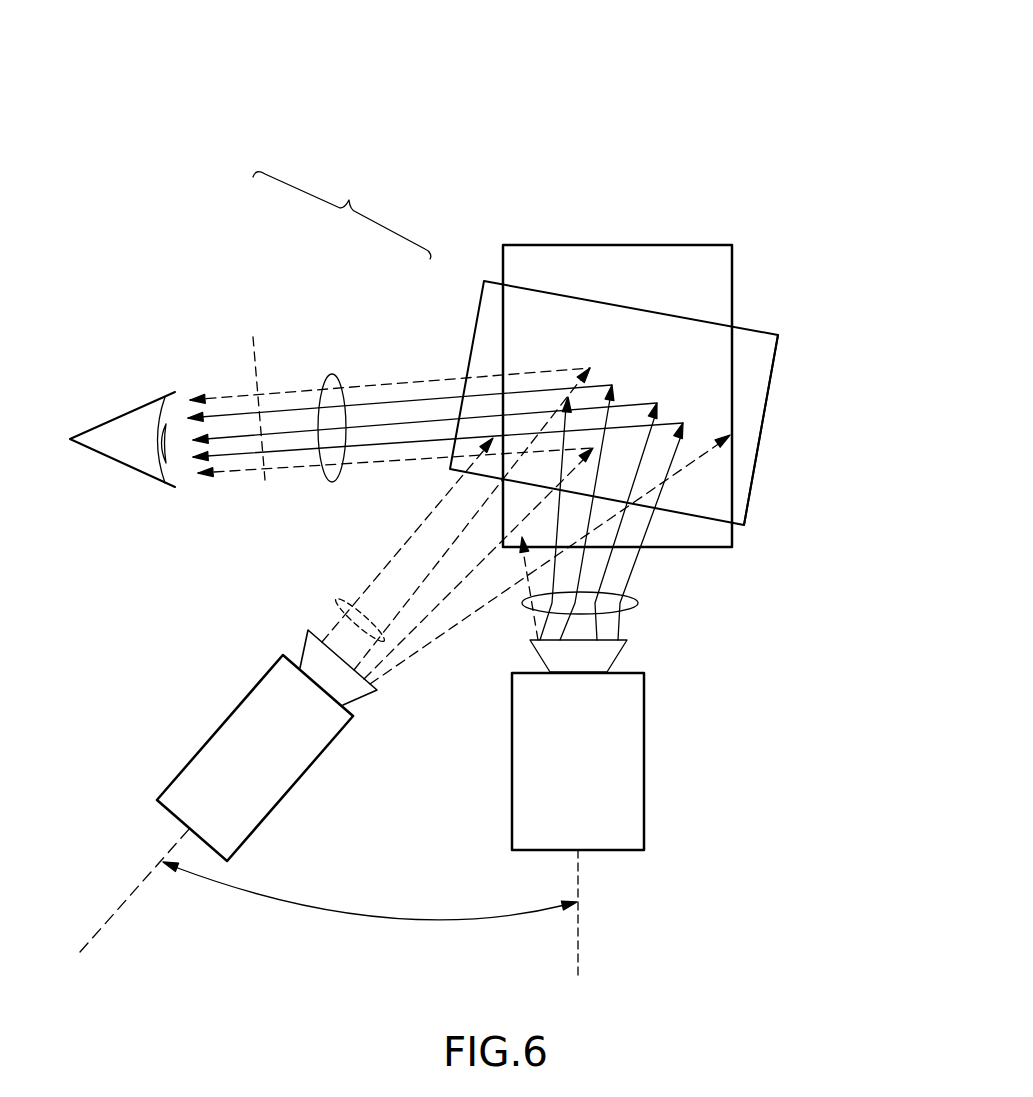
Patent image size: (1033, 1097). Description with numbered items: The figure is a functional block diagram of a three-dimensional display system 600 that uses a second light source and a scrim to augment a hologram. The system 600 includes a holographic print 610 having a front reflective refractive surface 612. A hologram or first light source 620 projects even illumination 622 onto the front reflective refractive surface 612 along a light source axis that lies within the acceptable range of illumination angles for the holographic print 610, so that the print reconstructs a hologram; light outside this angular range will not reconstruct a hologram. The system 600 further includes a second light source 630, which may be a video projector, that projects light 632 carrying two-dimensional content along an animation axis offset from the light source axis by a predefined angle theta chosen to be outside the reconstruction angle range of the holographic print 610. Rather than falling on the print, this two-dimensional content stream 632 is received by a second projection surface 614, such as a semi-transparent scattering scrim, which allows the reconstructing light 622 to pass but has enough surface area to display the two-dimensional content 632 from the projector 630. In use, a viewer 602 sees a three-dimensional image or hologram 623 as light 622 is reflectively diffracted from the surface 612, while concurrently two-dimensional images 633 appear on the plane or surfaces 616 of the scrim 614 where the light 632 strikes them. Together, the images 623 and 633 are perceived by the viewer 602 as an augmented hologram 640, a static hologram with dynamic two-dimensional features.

The 3D display system 600 is at (167, 150).
The viewer 602 is at (115, 420).
The holographic print 610 is at (698, 245).
The front reflective refractive surface 612 is at (720, 277).
The second projection surface 614 is at (762, 332).
The plane/surfaces of the scrim 616 is at (753, 358).
The hologram or first light source 620 is at (645, 752).
The even illumination 622 is at (637, 602).
The 3D image or hologram 623 is at (338, 376).
The second light source 630 is at (292, 790).
The light / 2D content stream 632 is at (408, 670).
The 2D images 633 is at (253, 337).
The augmented hologram 640 is at (345, 193).